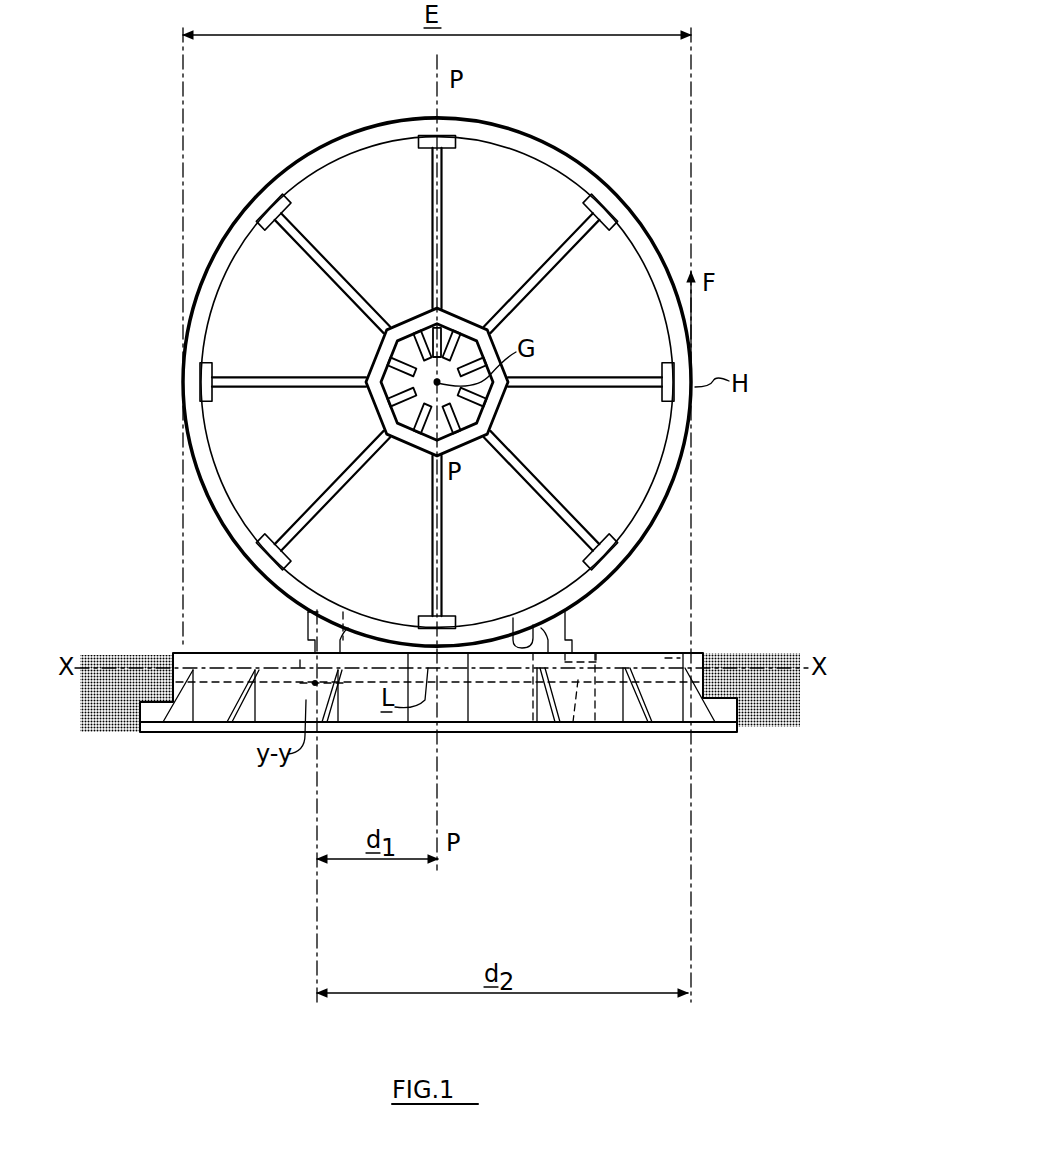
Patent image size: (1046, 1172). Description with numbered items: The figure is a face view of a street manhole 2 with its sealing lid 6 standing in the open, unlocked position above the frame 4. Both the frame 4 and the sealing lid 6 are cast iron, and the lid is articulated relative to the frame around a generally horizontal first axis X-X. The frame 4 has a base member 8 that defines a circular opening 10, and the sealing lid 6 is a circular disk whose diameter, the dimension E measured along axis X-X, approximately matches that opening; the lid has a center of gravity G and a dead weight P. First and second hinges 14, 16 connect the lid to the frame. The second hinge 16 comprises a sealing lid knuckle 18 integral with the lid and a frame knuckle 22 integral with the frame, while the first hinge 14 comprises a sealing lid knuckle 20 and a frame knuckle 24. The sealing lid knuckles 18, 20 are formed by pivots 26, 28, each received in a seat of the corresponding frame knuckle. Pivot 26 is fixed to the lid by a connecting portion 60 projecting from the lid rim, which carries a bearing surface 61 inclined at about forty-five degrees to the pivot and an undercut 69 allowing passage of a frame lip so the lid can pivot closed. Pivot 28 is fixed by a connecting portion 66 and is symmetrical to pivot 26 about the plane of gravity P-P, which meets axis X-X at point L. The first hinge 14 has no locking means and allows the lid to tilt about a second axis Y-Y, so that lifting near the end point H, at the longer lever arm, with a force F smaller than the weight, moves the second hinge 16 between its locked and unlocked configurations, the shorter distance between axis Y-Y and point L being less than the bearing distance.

The street manhole 2 is at (614, 171).
The sealing lid 6 is at (617, 260).
The frame 4 is at (696, 655).
The base member 8 is at (676, 655).
The circular opening 10 is at (234, 666).
The first hinge 14 is at (294, 629).
The second hinge 16 is at (602, 635).
The sealing lid knuckle 18 is at (568, 728).
The sealing lid knuckle 20 is at (348, 650).
The frame knuckle 22 is at (596, 658).
The frame knuckle 24 is at (300, 660).
The pivot 26 is at (672, 658).
The pivot 28 is at (312, 683).
The connecting portion 60 is at (565, 622).
The bearing surface 61 is at (520, 634).
The connecting portion 66 is at (318, 640).
The undercut 69 is at (580, 639).